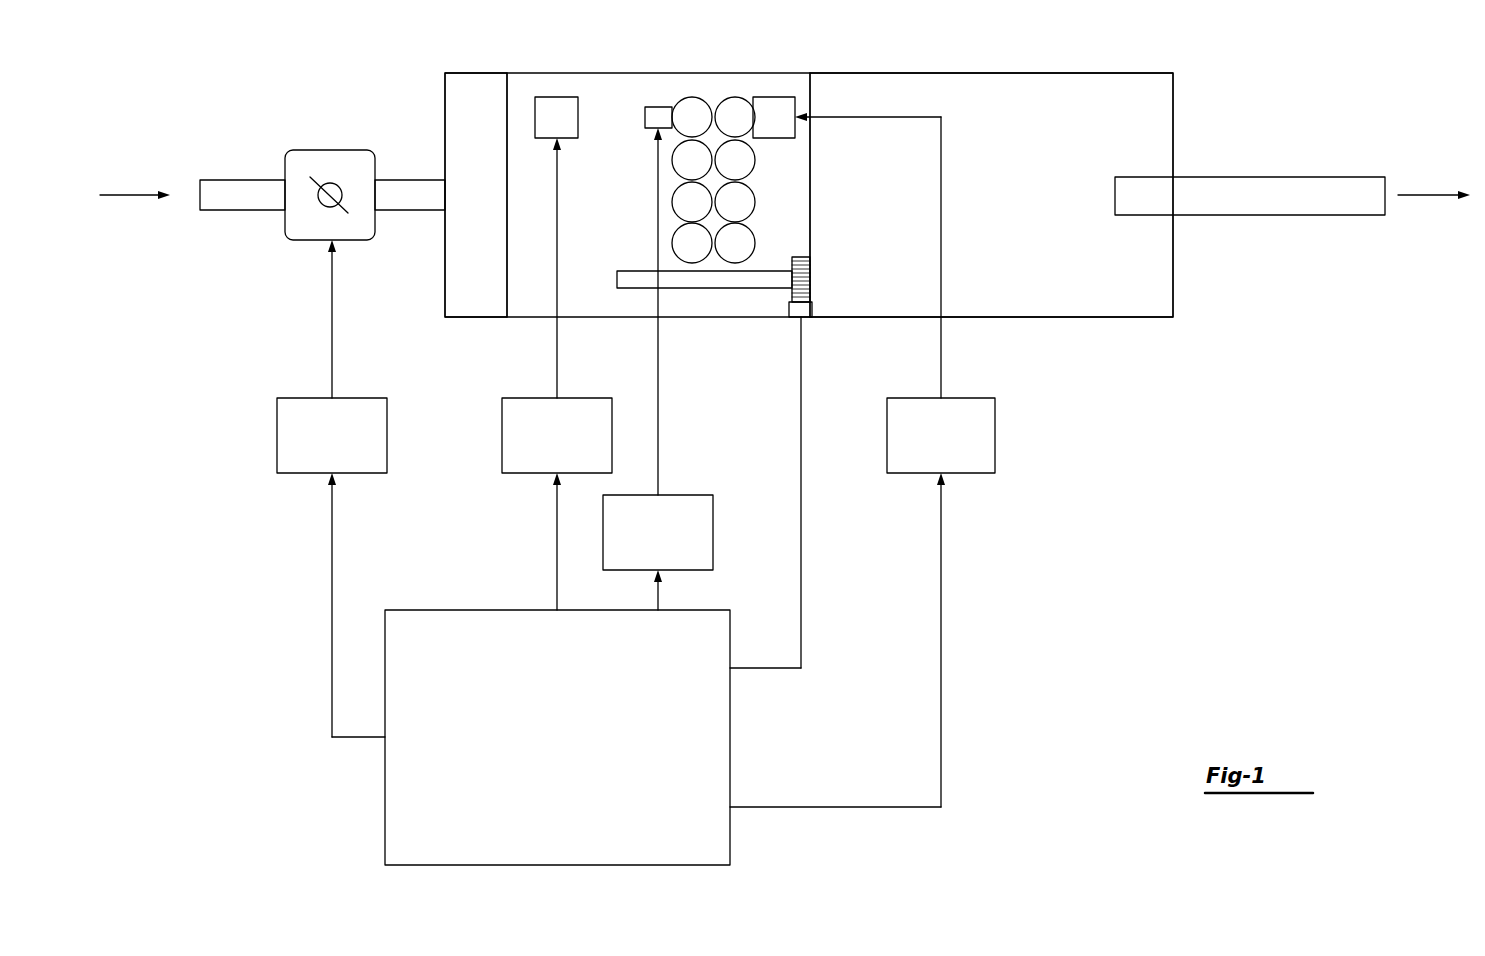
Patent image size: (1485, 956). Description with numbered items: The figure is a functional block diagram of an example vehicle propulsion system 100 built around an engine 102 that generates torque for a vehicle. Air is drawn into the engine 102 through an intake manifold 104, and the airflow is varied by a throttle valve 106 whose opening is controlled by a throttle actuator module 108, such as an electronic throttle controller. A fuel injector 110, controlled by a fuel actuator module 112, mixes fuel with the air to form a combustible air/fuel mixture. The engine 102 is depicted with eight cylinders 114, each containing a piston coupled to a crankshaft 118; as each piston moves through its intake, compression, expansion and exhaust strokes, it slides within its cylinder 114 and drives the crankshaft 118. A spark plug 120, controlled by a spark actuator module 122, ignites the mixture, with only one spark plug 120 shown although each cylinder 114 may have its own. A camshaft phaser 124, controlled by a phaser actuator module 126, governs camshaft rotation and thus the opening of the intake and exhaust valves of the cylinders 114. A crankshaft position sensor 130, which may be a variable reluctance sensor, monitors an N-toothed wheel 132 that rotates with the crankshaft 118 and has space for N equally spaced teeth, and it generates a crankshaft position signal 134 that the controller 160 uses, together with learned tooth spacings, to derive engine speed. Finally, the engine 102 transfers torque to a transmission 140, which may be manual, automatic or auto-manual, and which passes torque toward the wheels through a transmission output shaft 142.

The vehicle propulsion system 100 is at (1308, 76).
The engine 102 is at (640, 73).
The intake manifold 104 is at (477, 73).
The throttle valve 106 is at (331, 150).
The throttle actuator module 108 is at (320, 449).
The fuel injector 110 is at (557, 97).
The fuel actuator module 112 is at (545, 449).
The cylinders 114 is at (712, 84).
The crankshaft 118 is at (635, 271).
The spark plug 120 is at (650, 107).
The spark actuator module 122 is at (646, 546).
The camshaft phaser 124 is at (775, 97).
The phaser actuator module 126 is at (929, 449).
The crankshaft position sensor 130 is at (814, 310).
The N-toothed wheel 132 is at (812, 258).
The crankshaft position signal 134 is at (803, 575).
The transmission 140 is at (1075, 73).
The transmission output shaft 142 is at (1250, 177).
The controller 160 is at (544, 744).